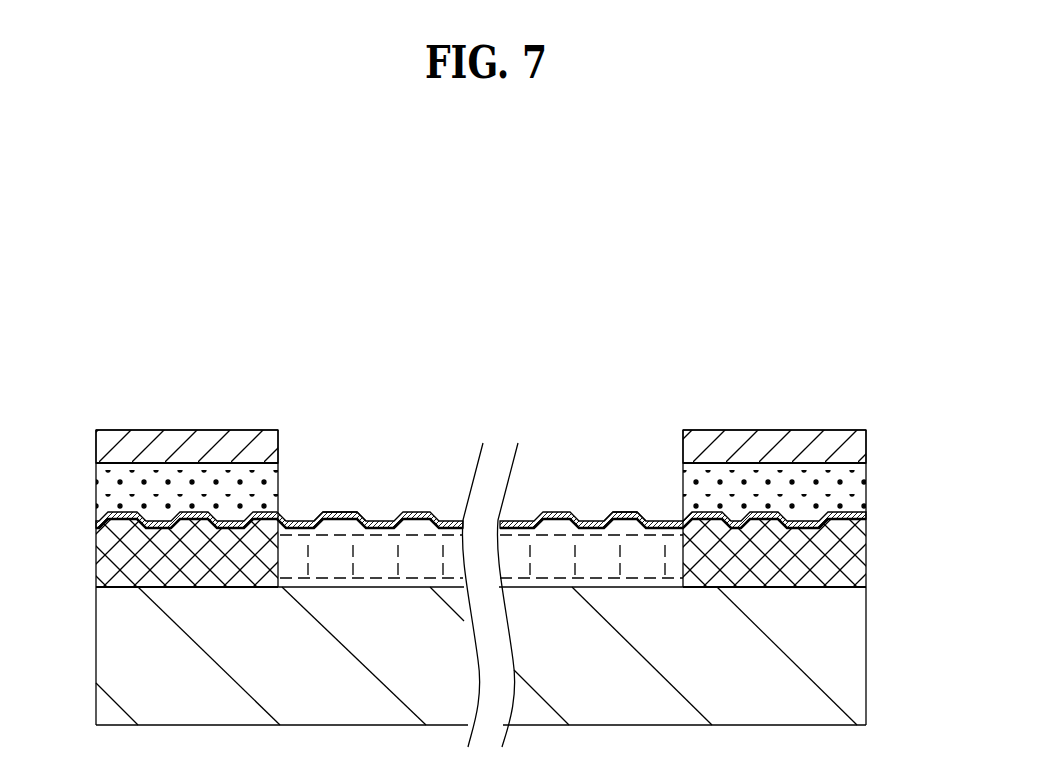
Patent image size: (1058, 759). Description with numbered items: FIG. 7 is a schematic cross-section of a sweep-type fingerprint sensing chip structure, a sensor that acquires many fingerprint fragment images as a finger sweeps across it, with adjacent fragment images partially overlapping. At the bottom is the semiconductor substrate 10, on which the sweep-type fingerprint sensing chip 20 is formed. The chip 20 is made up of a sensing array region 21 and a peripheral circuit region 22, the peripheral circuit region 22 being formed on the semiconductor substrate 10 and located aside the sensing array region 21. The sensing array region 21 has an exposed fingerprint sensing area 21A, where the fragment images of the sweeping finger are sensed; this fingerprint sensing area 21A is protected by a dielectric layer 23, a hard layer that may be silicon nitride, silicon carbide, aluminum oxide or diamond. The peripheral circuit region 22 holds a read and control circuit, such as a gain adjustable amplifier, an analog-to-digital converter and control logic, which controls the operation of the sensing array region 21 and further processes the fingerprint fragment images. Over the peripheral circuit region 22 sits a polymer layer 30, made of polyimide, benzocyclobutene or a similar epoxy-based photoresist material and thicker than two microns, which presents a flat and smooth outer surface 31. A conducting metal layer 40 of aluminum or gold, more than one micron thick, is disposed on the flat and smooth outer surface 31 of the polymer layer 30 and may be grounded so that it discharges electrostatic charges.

The semiconductor substrate 10 is at (108, 660).
The sweep-type fingerprint sensing chip 20 is at (780, 178).
The sensing array region 21 is at (410, 525).
The fingerprint sensing area 21A is at (588, 522).
The peripheral circuit region 22 is at (105, 560).
The dielectric layer 23 is at (340, 512).
The polymer layer 30 is at (105, 493).
The flat and smooth outer surface 31 is at (200, 462).
The conducting metal layer 40 is at (107, 450).